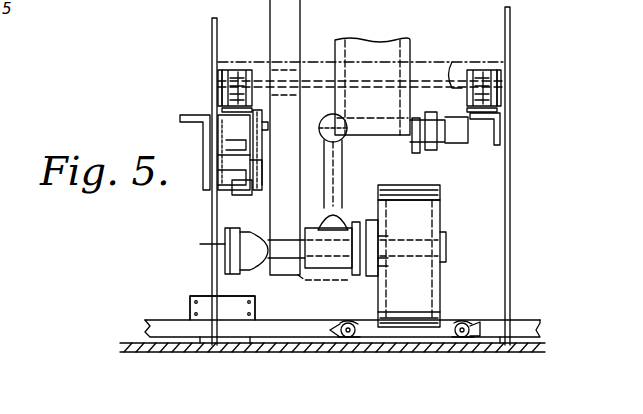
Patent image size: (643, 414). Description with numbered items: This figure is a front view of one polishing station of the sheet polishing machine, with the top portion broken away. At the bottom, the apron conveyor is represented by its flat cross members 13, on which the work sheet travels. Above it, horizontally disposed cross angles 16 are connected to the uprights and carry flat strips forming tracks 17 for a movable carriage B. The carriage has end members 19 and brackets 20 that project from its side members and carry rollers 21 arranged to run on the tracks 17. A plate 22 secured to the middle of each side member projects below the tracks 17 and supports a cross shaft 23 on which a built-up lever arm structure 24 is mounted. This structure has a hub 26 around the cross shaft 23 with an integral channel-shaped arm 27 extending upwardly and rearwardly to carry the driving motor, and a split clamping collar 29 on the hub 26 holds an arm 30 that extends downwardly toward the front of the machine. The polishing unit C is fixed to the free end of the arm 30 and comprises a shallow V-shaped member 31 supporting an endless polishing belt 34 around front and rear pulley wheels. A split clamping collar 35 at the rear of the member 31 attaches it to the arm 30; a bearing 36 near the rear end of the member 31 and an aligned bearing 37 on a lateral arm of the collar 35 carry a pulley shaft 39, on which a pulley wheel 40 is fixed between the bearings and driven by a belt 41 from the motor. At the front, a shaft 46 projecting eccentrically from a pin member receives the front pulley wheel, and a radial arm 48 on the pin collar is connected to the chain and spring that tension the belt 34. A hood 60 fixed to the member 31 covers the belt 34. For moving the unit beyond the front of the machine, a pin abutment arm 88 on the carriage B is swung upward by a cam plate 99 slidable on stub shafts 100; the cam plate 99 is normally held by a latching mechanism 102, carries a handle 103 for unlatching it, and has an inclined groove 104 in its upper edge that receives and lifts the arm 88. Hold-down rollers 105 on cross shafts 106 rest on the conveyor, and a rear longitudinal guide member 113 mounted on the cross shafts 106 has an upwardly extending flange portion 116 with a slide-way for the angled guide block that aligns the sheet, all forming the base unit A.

The flat cross members 13 is at (124, 346).
The cross angles 16 is at (204, 130).
The tracks 17 is at (238, 72).
The end members 19 is at (434, 62).
The brackets 20 is at (224, 78).
The rollers 21 is at (232, 90).
The plate 22 is at (456, 80).
The cross shaft 23 is at (434, 128).
The lever arm structure 24 is at (348, 140).
The hub 26 is at (455, 145).
The channel-shaped arm 27 is at (380, 40).
The split clamping collar 29 is at (346, 120).
The arm 30 is at (342, 212).
The V-shaped member 31 is at (322, 272).
The endless polishing belt 34 is at (410, 318).
The split clamping collar 35 is at (312, 228).
The bearing 36 is at (378, 222).
The bearing 37 is at (230, 242).
The pulley shaft 39 is at (240, 262).
The pulley wheel 40 is at (252, 268).
The belt 41 is at (288, 32).
The shaft 46 is at (420, 248).
The radial arm 48 is at (405, 192).
The hood 60 is at (446, 236).
The pin abutment arm 88 is at (263, 116).
The cam plate 99 is at (263, 176).
The stub shafts 100 is at (238, 195).
The latching mechanism 102 is at (216, 182).
The handle 103 is at (216, 156).
The inclined groove 104 is at (234, 152).
The hold-down rollers 105 is at (350, 322).
The cross shafts 106 is at (342, 326).
The rear longitudinal guide member 113 is at (274, 320).
The flange portion 116 is at (345, 319).
The base unit A is at (542, 340).
The carriage B is at (490, 64).
The polishing unit C is at (452, 215).